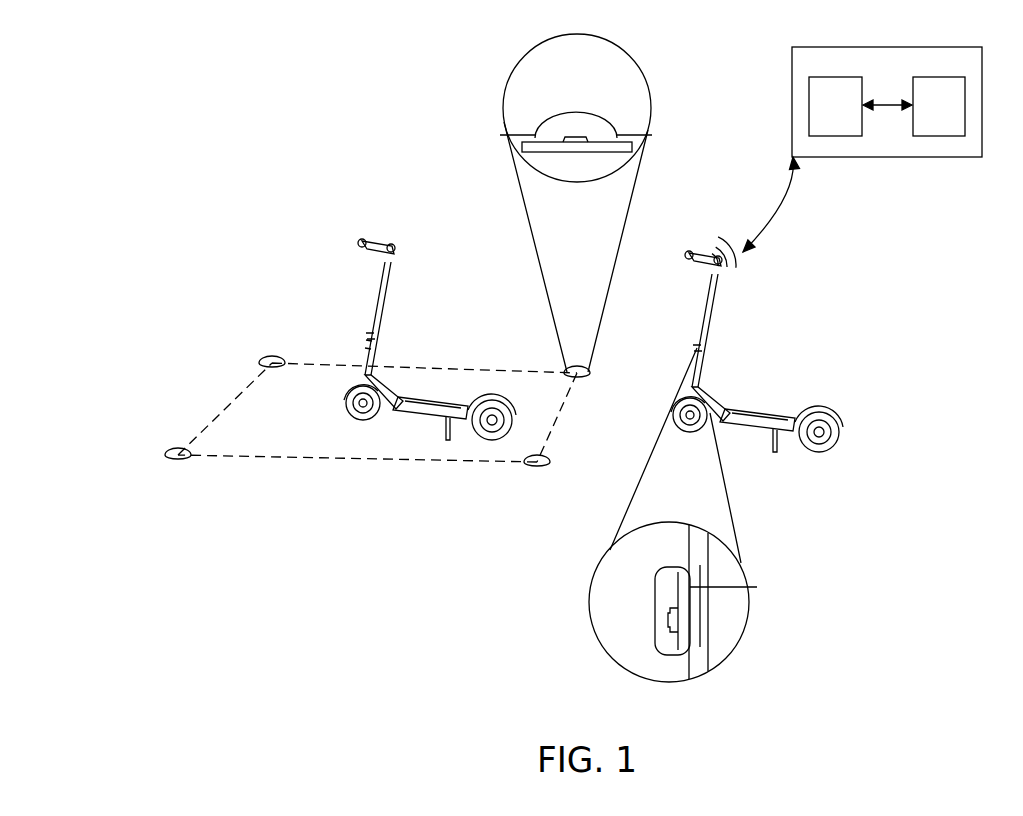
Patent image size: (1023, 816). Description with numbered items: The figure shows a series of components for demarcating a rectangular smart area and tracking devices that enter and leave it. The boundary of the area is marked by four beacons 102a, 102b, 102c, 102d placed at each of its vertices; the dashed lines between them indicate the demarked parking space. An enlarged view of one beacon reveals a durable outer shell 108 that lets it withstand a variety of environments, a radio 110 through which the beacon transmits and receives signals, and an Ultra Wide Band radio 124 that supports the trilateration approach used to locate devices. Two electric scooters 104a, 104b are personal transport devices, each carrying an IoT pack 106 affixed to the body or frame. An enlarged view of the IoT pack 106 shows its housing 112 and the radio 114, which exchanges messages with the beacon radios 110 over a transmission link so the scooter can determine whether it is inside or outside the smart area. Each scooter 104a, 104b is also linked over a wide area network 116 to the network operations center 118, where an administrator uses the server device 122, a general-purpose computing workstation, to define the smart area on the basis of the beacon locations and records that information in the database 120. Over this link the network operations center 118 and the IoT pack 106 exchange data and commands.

The beacon 102a is at (163, 457).
The beacon 102b is at (523, 463).
The beacon 102c is at (580, 378).
The beacon 102d is at (260, 365).
The scooter 104a is at (405, 398).
The scooter 104b is at (747, 408).
The IoT pack 106 is at (365, 342).
The durable outer shell 108 is at (606, 122).
The radio 110 is at (566, 136).
The tag housing 112 is at (655, 577).
The radio 114 is at (668, 620).
The wide area network 116 is at (740, 263).
The network operations center 118 is at (792, 65).
The database 120 is at (953, 137).
The server device 122 is at (808, 113).
The Ultra Wide Band radio 124 is at (522, 145).